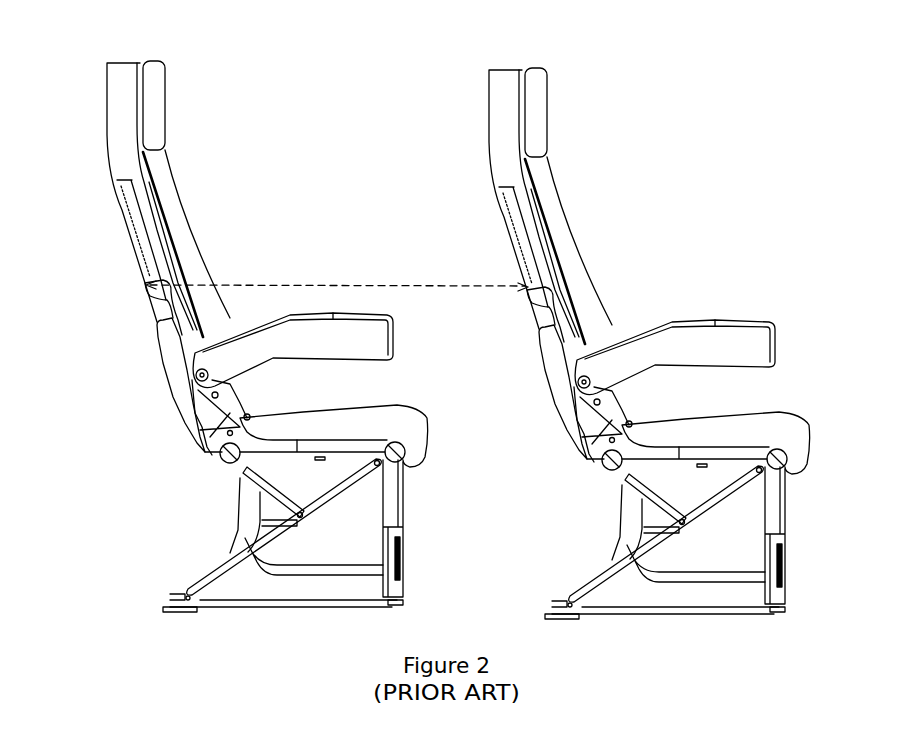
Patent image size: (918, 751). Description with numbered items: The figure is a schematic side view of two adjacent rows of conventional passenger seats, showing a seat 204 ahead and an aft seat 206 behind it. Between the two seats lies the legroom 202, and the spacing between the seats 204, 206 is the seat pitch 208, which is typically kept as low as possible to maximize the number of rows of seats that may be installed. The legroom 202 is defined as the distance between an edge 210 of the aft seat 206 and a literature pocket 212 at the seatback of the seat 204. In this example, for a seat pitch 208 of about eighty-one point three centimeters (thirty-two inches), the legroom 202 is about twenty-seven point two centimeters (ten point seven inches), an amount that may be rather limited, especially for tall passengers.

The legroom 202 is at (563, 476).
The seat 204 is at (488, 89).
The aft seat 206 is at (138, 85).
The seat pitch 208 is at (337, 273).
The edge 210 is at (425, 420).
The literature pocket 212 is at (529, 392).